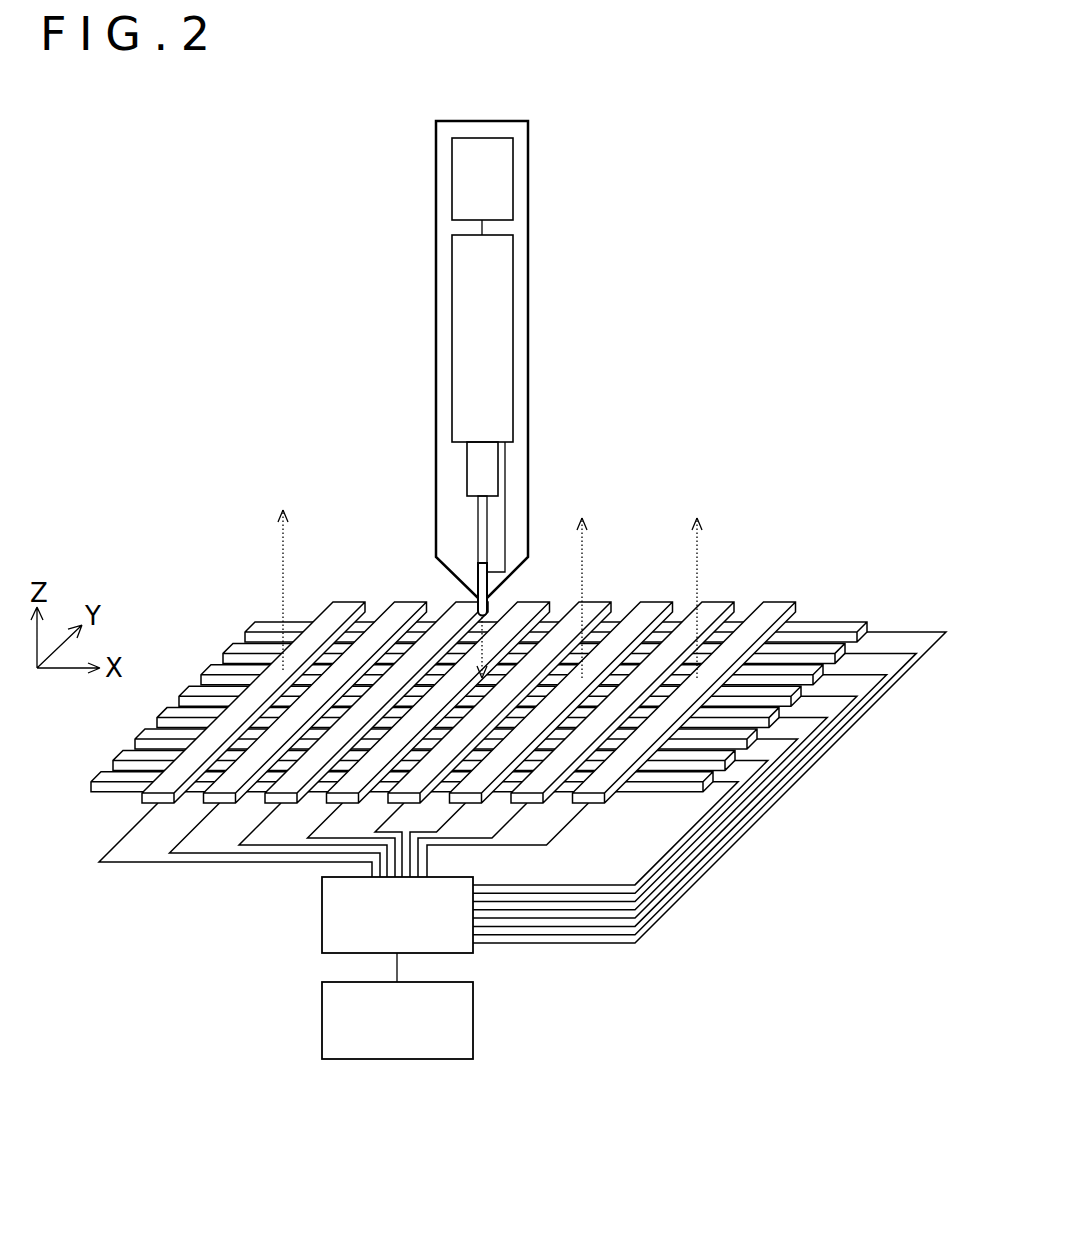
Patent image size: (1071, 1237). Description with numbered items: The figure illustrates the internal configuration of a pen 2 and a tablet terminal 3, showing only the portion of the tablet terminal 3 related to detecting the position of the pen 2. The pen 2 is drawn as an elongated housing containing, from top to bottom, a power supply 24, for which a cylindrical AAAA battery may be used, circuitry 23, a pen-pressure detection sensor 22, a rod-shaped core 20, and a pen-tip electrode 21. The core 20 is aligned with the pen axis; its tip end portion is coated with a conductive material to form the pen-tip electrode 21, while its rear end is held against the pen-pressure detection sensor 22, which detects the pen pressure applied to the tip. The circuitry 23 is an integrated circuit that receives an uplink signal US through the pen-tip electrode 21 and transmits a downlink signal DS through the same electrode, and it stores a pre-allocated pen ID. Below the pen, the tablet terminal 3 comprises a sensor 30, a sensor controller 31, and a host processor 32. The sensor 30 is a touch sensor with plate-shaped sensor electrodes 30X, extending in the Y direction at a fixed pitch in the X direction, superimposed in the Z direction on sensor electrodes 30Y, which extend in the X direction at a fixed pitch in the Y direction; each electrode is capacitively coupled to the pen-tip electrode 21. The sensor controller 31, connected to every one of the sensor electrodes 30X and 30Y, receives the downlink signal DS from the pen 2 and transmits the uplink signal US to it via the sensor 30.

The pen 2 is at (484, 338).
The power supply 24 is at (517, 183).
The circuitry 23 is at (513, 333).
The pen-pressure detection sensor 22 is at (467, 470).
The core 20 is at (478, 545).
The pen-tip electrode 21 is at (478, 588).
The sensor 30 is at (518, 712).
The sensor electrodes 30X is at (775, 600).
The sensor electrodes 30Y is at (848, 621).
The sensor controller 31 is at (322, 913).
The host processor 32 is at (322, 1018).
The tablet terminal 3 is at (518, 770).
The uplink signal US is at (285, 578).
The downlink signal DS is at (486, 650).